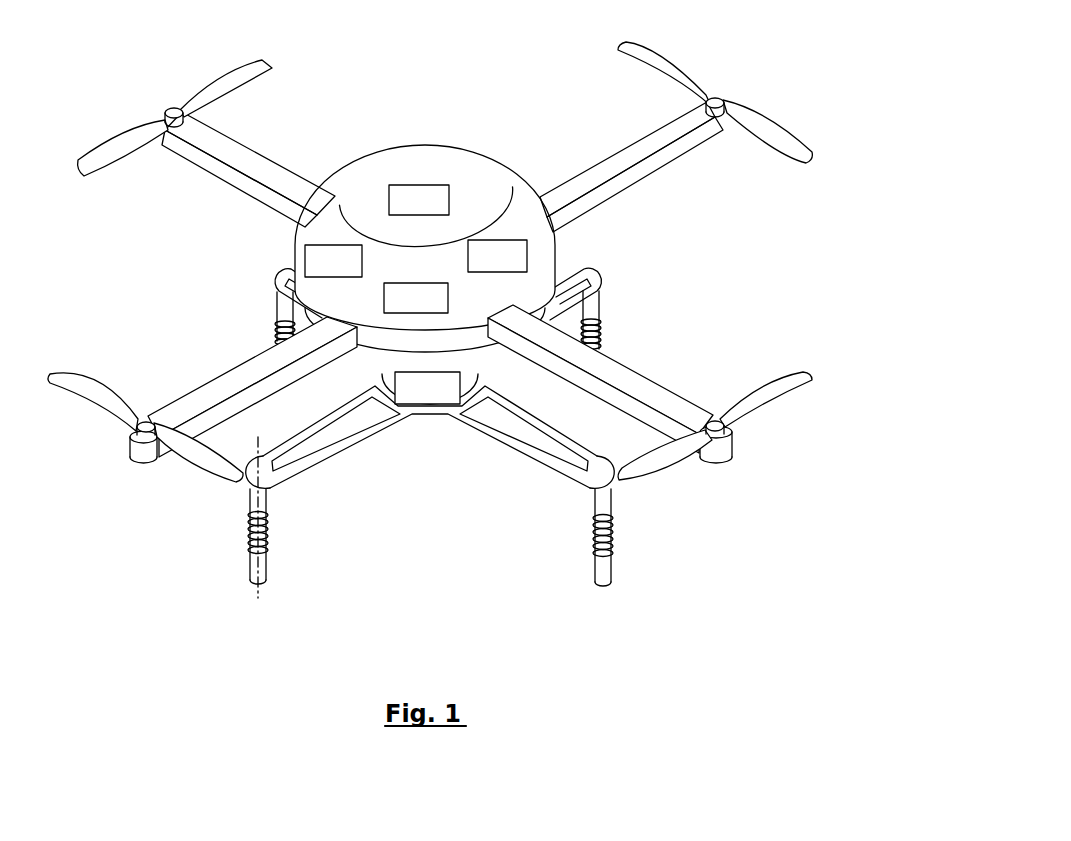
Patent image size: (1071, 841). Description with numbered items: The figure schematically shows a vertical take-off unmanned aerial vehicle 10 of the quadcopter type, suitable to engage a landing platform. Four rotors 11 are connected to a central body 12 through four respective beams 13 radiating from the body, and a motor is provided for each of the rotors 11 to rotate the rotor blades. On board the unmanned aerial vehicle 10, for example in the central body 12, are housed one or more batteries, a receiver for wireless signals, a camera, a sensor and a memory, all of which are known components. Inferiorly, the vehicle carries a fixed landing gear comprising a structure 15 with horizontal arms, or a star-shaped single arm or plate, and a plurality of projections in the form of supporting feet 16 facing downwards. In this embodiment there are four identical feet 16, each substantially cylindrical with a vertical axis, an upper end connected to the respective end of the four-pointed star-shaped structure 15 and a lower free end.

The unmanned aerial vehicle 10 is at (430, 319).
The rotor 11 is at (166, 90).
The central body 12 is at (405, 163).
The beam 13 is at (284, 178).
The structure 15 is at (511, 455).
The supporting foot 16 is at (270, 308).